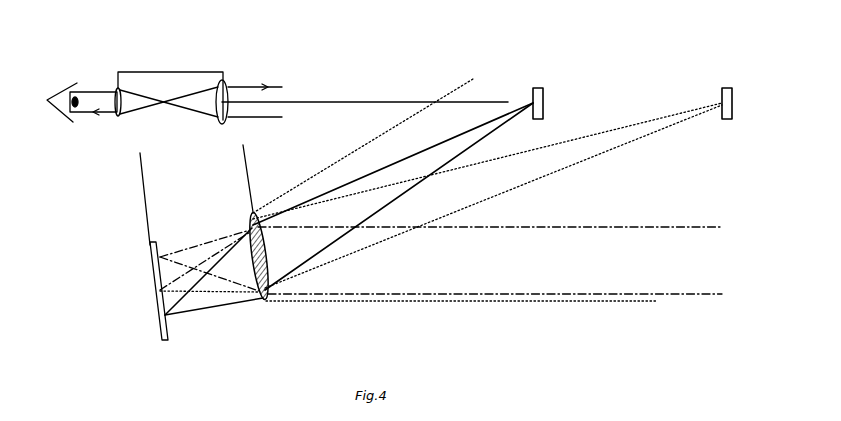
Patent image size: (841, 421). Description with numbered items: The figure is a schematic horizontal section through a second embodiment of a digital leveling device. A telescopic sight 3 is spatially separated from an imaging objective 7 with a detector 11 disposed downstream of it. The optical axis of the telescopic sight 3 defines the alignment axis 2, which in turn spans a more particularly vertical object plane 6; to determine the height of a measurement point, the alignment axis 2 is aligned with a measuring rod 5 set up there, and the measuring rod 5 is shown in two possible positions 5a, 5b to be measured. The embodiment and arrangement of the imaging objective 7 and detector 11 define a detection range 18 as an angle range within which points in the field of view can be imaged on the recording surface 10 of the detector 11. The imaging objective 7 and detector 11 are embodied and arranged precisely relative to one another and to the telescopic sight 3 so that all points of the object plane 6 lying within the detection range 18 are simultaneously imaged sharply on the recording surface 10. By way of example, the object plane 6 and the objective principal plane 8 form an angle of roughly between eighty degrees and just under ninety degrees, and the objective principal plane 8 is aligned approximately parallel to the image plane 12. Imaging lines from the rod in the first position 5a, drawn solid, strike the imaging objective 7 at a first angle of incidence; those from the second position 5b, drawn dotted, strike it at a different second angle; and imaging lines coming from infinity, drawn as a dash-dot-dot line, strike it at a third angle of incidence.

The alignment axis 2 is at (401, 102).
The telescopic sight 3 is at (171, 84).
The measuring rod 5 is at (389, 73).
The first position 5a is at (522, 72).
The second position 5b is at (723, 128).
The object plane 6 is at (325, 102).
The imaging objective 7 is at (271, 272).
The objective principal plane 8 is at (246, 161).
The recording surface 10 is at (170, 335).
The detector 11 is at (128, 252).
The image plane 12 is at (143, 175).
The detection range 18 is at (490, 279).